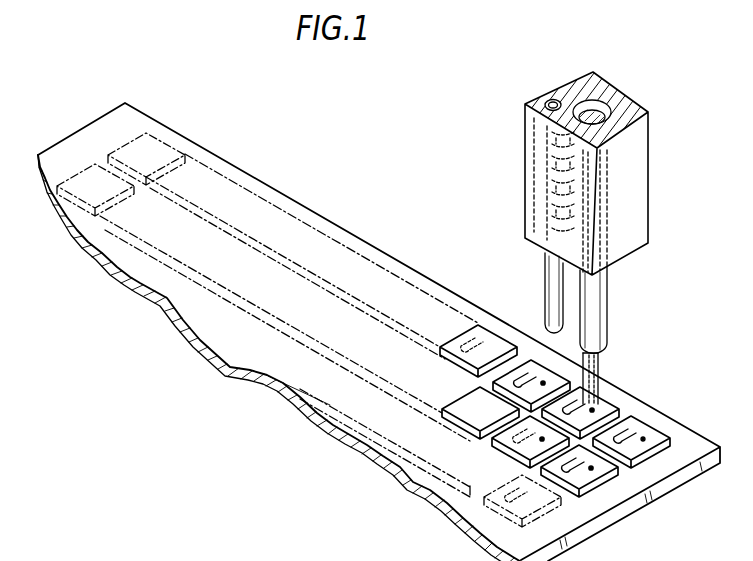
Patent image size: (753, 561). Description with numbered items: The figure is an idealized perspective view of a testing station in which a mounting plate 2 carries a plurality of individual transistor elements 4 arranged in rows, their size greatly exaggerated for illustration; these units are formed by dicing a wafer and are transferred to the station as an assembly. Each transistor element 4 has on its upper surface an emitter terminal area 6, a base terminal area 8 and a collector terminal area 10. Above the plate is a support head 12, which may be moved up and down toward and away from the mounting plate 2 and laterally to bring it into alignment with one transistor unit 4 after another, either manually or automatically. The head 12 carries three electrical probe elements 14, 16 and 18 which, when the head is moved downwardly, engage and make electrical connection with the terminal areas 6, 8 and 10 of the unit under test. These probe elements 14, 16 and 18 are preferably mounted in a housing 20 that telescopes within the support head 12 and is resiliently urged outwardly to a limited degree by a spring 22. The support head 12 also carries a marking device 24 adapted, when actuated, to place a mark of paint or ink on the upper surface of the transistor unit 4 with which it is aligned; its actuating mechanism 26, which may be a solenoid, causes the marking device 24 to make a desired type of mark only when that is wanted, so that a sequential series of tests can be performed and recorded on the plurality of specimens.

The mounting plate 2 is at (613, 493).
The transistor elements 4 is at (480, 381).
The emitter terminal area 6 is at (643, 439).
The base terminal area 8 is at (624, 440).
The collector terminal area 10 is at (660, 430).
The support head 12 is at (632, 135).
The probe element 14 is at (586, 357).
The probe element 16 is at (596, 368).
The probe element 18 is at (598, 363).
The housing 20 is at (598, 289).
The spring 22 is at (608, 183).
The marking device 24 is at (541, 280).
The actuating mechanism 26 is at (546, 160).